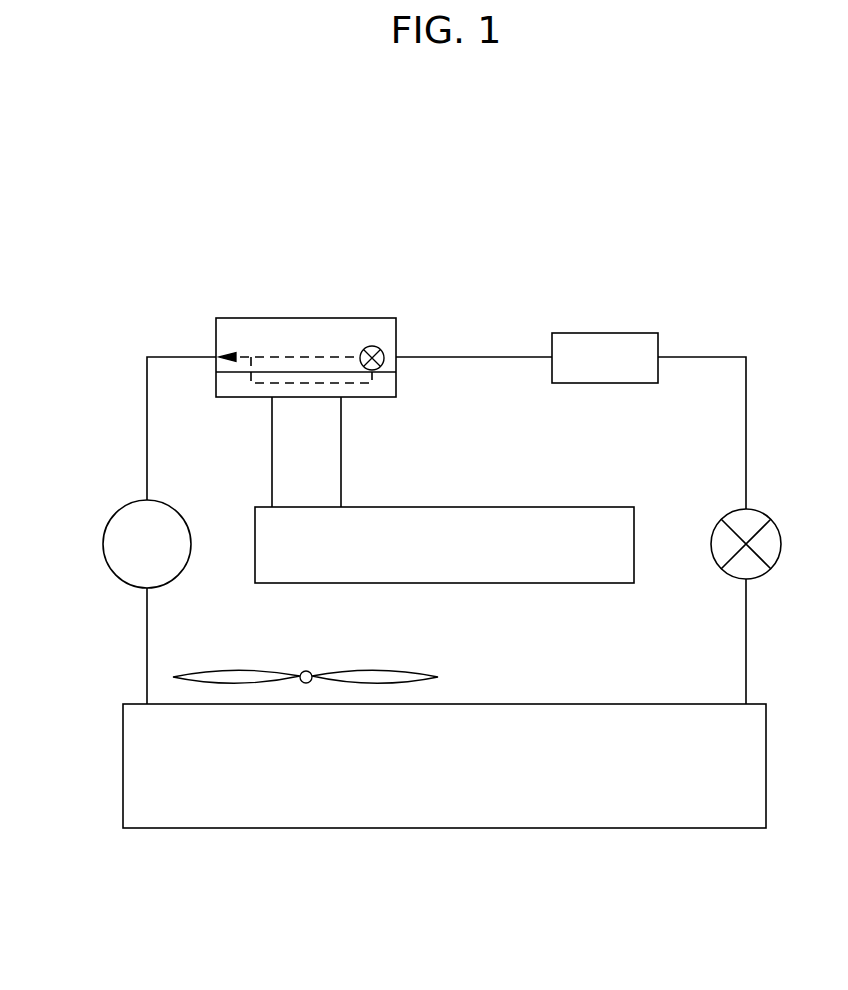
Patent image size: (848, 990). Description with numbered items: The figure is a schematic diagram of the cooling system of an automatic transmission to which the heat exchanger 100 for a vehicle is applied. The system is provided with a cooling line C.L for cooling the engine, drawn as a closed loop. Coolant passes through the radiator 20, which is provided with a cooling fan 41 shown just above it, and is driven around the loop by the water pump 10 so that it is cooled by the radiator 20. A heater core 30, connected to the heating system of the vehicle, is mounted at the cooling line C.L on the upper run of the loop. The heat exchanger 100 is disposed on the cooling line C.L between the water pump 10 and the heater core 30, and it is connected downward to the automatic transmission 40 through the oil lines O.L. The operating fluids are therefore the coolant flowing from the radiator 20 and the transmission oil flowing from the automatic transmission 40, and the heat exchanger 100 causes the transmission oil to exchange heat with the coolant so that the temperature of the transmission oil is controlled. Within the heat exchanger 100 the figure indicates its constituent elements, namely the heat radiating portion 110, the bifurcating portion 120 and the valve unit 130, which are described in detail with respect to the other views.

The water pump 10 is at (111, 519).
The radiator 20 is at (123, 765).
The heater core 30 is at (605, 333).
The automatic transmission 40 is at (503, 506).
The cooling fan 41 is at (308, 671).
The heat exchanger 100 is at (351, 335).
The heat radiating portion 110 is at (368, 330).
The bifurcating portion 120 is at (233, 398).
The valve unit 130 is at (380, 348).
The cooling line C.L is at (147, 430).
The oil lines O.L is at (272, 430).